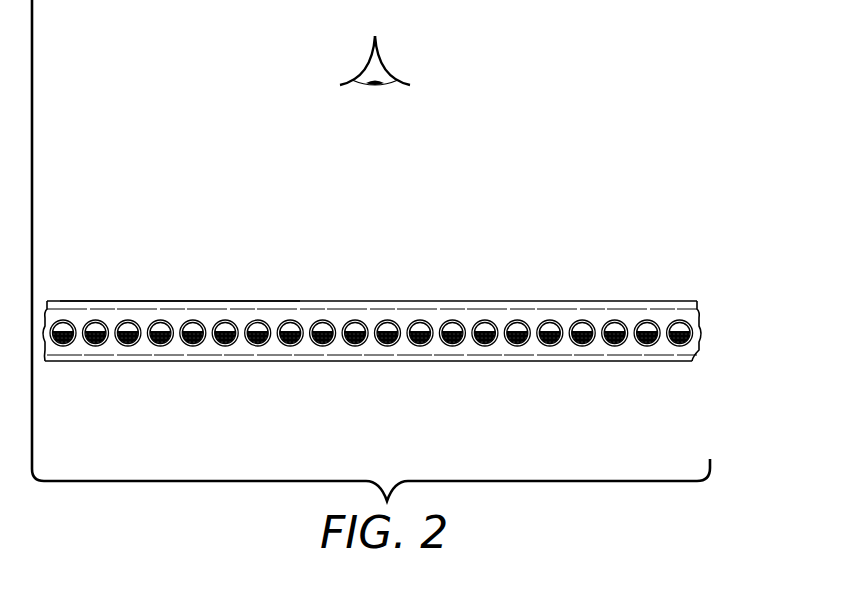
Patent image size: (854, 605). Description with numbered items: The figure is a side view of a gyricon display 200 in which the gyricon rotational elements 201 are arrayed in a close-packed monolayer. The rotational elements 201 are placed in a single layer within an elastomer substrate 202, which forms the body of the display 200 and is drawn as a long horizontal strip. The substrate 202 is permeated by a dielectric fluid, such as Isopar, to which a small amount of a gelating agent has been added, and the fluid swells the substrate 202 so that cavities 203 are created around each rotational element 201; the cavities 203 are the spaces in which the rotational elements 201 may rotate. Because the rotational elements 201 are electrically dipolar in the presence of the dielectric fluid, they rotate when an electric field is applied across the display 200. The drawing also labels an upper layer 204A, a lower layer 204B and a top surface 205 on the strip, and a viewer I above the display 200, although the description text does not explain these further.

The display device 200 is at (588, 173).
The capsules 201 is at (380, 322).
The binder / substrate layer 202 is at (699, 320).
The display material within capsules 203 is at (547, 320).
The top electrode 204A is at (697, 303).
The bottom electrode 204B is at (692, 360).
The top surface of display 205 is at (143, 302).
The viewer / observer eye I is at (386, 62).